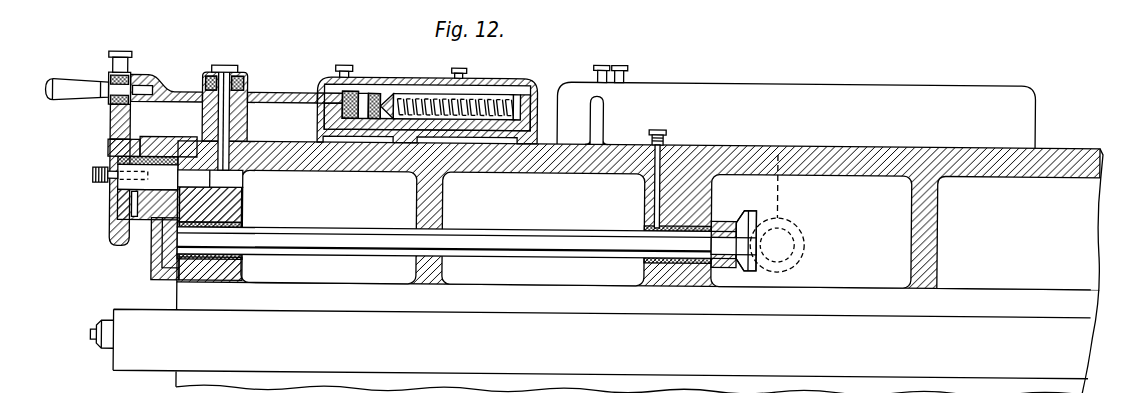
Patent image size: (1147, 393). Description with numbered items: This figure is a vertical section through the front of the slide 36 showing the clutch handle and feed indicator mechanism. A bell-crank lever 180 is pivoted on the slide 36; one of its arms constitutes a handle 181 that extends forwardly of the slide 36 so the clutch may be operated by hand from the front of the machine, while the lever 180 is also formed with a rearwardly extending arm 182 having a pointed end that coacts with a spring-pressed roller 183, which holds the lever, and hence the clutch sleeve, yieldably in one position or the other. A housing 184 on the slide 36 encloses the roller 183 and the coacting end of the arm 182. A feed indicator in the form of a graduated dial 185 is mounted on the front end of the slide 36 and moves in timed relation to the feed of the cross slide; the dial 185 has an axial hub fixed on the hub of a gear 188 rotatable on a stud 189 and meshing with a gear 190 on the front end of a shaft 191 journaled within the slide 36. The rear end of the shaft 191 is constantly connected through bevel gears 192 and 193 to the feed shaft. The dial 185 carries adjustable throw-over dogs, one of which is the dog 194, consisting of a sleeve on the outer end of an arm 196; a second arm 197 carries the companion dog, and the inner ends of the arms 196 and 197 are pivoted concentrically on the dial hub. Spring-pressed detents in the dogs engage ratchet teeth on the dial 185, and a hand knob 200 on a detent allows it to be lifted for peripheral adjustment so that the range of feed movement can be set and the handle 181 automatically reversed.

The slide 36 is at (1061, 150).
The bell-crank lever 180 is at (187, 92).
The handle 181 is at (80, 69).
The rearwardly extending arm 182 is at (277, 93).
The spring-pressed roller 183 is at (353, 80).
The housing 184 is at (393, 80).
The graduated dial 185 is at (110, 237).
The gear 188 is at (163, 139).
The stud 189 is at (160, 175).
The gear 190 is at (170, 264).
The shaft 191 is at (330, 237).
The bevel gear 192 is at (752, 212).
The bevel gear 193 is at (782, 152).
The throw-over dog 194 is at (107, 74).
The arm 196 is at (138, 127).
The arm 197 is at (153, 217).
The hand knob 200 is at (127, 56).